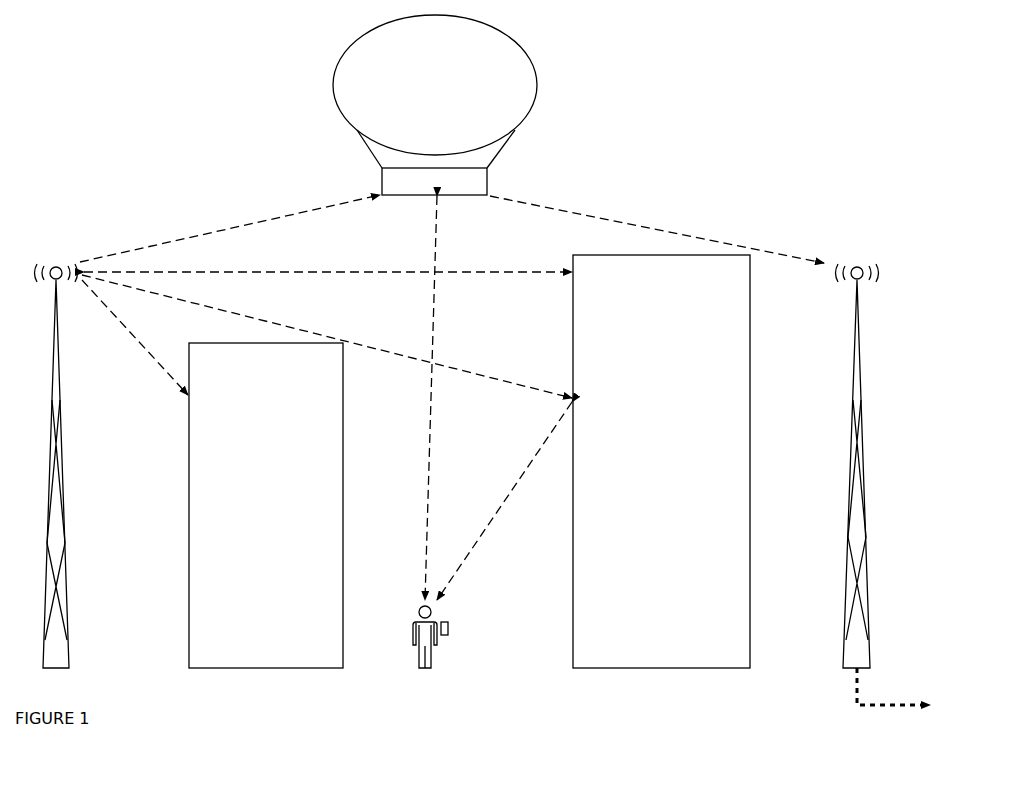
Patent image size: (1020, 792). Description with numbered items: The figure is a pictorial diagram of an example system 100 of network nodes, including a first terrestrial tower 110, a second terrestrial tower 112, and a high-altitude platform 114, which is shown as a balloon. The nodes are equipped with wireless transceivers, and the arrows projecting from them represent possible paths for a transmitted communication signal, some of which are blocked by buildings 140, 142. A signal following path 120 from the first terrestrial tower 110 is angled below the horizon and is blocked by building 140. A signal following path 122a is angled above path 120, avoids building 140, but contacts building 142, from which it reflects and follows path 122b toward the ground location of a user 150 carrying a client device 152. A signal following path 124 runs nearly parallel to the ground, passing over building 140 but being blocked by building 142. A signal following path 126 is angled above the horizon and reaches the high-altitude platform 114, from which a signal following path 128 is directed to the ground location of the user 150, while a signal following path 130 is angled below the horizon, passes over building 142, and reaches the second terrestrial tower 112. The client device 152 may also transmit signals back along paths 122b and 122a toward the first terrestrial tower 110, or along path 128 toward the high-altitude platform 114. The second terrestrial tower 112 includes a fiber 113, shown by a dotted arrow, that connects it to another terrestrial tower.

The system 100 is at (65, 691).
The first terrestrial tower 110 is at (56, 440).
The second terrestrial tower 112 is at (857, 440).
The fiber 113 is at (893, 699).
The high-altitude platform 114 is at (435, 105).
The path 120 is at (135, 337).
The path 122a is at (327, 336).
The path 122b is at (504, 501).
The path 124 is at (328, 260).
The path 126 is at (230, 228).
The path 128 is at (417, 398).
The path 130 is at (657, 229).
The building 140 is at (266, 505).
The building 142 is at (661, 461).
The user 150 is at (426, 653).
The client device 152 is at (463, 629).